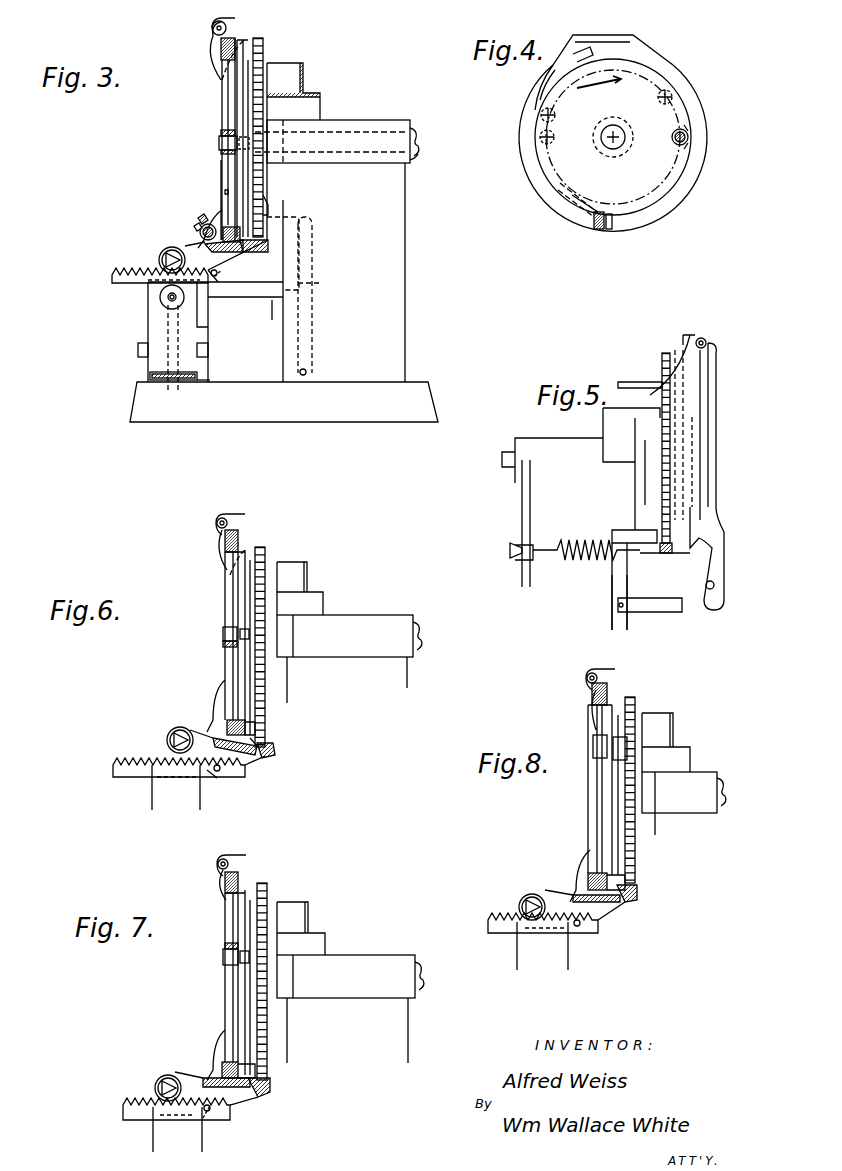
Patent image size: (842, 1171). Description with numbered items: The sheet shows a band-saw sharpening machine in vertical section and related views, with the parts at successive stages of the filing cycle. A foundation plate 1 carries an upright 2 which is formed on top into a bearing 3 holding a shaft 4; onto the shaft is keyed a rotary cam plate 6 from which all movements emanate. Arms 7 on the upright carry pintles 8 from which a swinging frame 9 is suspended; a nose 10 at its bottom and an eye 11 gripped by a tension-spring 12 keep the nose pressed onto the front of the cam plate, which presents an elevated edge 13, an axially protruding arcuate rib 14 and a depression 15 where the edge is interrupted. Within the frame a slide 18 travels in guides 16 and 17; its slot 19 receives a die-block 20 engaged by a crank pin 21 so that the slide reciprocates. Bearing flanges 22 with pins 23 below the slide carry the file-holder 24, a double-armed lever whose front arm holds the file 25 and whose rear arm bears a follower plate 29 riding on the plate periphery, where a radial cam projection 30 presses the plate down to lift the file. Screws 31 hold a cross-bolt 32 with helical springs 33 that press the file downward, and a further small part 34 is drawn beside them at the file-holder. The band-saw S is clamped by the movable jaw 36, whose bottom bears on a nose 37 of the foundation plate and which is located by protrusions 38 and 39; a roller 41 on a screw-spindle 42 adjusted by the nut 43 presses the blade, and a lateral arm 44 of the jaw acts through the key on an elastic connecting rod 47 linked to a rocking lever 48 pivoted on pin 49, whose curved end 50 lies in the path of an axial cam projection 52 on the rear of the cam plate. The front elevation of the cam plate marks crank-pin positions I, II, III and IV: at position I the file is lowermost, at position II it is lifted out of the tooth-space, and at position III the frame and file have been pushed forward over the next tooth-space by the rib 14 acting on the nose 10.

In FIG. 3, the foundation plate 1 is at (432, 390).
In FIG. 3, the upright 2 is at (405, 222).
In FIG. 5, the upright 2 is at (582, 484).
In FIG. 6, the upright 2 is at (342, 632).
In FIG. 7, the upright 2 is at (342, 982).
In FIG. 8, the upright 2 is at (666, 774).
In FIG. 3, the bearing 3 is at (355, 122).
In FIG. 6, the bearing 3 is at (355, 620).
In FIG. 7, the bearing 3 is at (350, 976).
In FIG. 8, the bearing 3 is at (684, 792).
In FIG. 3, the shaft 4 is at (413, 128).
In FIG. 6, the shaft 4 is at (420, 628).
In FIG. 3, the rotary cam plate 6 is at (266, 48).
In FIG. 4, the rotary cam plate 6 is at (613, 137).
In FIG. 5, the rotary cam plate 6 is at (662, 362).
In FIG. 6, the rotary cam plate 6 is at (265, 556).
In FIG. 7, the rotary cam plate 6 is at (267, 1020).
In FIG. 8, the rotary cam plate 6 is at (635, 715).
In FIG. 3, the arms 7 is at (215, 47).
In FIG. 5, the arms 7 is at (700, 368).
In FIG. 3, the pintles 8 is at (212, 28).
In FIG. 5, the pintles 8 is at (708, 341).
In FIG. 6, the pintles 8 is at (216, 523).
In FIG. 7, the pintles 8 is at (217, 864).
In FIG. 8, the pintles 8 is at (600, 679).
In FIG. 3, the frame 9 is at (233, 42).
In FIG. 5, the frame 9 is at (684, 338).
In FIG. 6, the frame 9 is at (236, 536).
In FIG. 7, the frame 9 is at (240, 885).
In FIG. 8, the frame 9 is at (605, 692).
In FIG. 3, the nose 10 is at (252, 262).
In FIG. 6, the nose 10 is at (262, 766).
In FIG. 7, the nose 10 is at (252, 1097).
In FIG. 8, the nose 10 is at (616, 910).
In FIG. 5, the eye 11 is at (672, 553).
In FIG. 5, the tension-spring 12 is at (580, 543).
In FIG. 4, the elevated edge 13 is at (690, 178).
In FIG. 3, the arcuate rib 14 is at (243, 99).
In FIG. 4, the arcuate rib 14 is at (568, 62).
In FIG. 6, the arcuate rib 14 is at (258, 684).
In FIG. 7, the arcuate rib 14 is at (255, 1038).
In FIG. 8, the arcuate rib 14 is at (622, 840).
In FIG. 4, the depression 15 is at (600, 235).
In FIG. 3, the guide 16 is at (231, 234).
In FIG. 6, the guide 16 is at (228, 723).
In FIG. 7, the guide 16 is at (238, 1070).
In FIG. 8, the guide 16 is at (606, 881).
In FIG. 6, the guide 17 is at (225, 545).
In FIG. 3, the slide 18 is at (228, 56).
In FIG. 5, the slide 18 is at (700, 430).
In FIG. 6, the slide 18 is at (226, 594).
In FIG. 7, the slide 18 is at (226, 985).
In FIG. 8, the slide 18 is at (600, 781).
In FIG. 3, the slot 19 is at (224, 115).
In FIG. 3, the die-block 20 is at (221, 134).
In FIG. 6, the die-block 20 is at (223, 646).
In FIG. 7, the die-block 20 is at (226, 946).
In FIG. 3, the crank pin 21 is at (219, 145).
In FIG. 4, the crank pin 21 is at (676, 144).
In FIG. 6, the crank pin 21 is at (223, 634).
In FIG. 7, the crank pin 21 is at (223, 955).
In FIG. 8, the crank pin 21 is at (610, 747).
In FIG. 3, the bearing flanges 22 is at (212, 212).
In FIG. 5, the bearing flanges 22 is at (708, 563).
In FIG. 6, the bearing flanges 22 is at (213, 712).
In FIG. 7, the bearing flanges 22 is at (210, 1065).
In FIG. 8, the bearing flanges 22 is at (578, 875).
In FIG. 3, the pins 23 is at (216, 276).
In FIG. 5, the pins 23 is at (710, 590).
In FIG. 6, the pins 23 is at (218, 772).
In FIG. 7, the pins 23 is at (209, 1112).
In FIG. 8, the pins 23 is at (578, 927).
In FIG. 3, the file-holder 24 is at (195, 253).
In FIG. 6, the file-holder 24 is at (207, 742).
In FIG. 7, the file-holder 24 is at (190, 1085).
In FIG. 8, the file-holder 24 is at (560, 900).
In FIG. 3, the file 25 is at (160, 258).
In FIG. 6, the file 25 is at (168, 734).
In FIG. 7, the file 25 is at (158, 1080).
In FIG. 8, the file 25 is at (522, 898).
In FIG. 3, the follower plate 29 is at (264, 252).
In FIG. 6, the follower plate 29 is at (276, 750).
In FIG. 7, the follower plate 29 is at (259, 1087).
In FIG. 8, the follower plate 29 is at (633, 900).
In FIG. 4, the radial cam projection 30 is at (620, 42).
In FIG. 6, the radial cam projection 30 is at (270, 740).
In FIG. 3, the screws 31 is at (199, 216).
In FIG. 3, the cross-bolt 32 is at (200, 232).
In FIG. 3, the helical springs 33 is at (222, 200).
In FIG. 3, the catch 34 is at (194, 225).
In FIG. 3, the movable gripping jaw 36 is at (156, 332).
In FIG. 6, the movable gripping jaw 36 is at (176, 787).
In FIG. 7, the movable gripping jaw 36 is at (177, 1129).
In FIG. 8, the movable gripping jaw 36 is at (542, 946).
In FIG. 3, the nose 37 is at (212, 380).
In FIG. 3, the protrusion 38 is at (138, 352).
In FIG. 3, the protrusion 39 is at (208, 350).
In FIG. 3, the roller 41 is at (160, 296).
In FIG. 3, the screw-spindle 42 is at (170, 310).
In FIG. 3, the nut 43 is at (150, 378).
In FIG. 3, the lateral arm 44 is at (206, 322).
In FIG. 3, the connecting rod 47 is at (272, 320).
In FIG. 5, the connecting rod 47 is at (655, 612).
In FIG. 3, the rocking lever 48 is at (312, 262).
In FIG. 5, the rocking lever 48 is at (612, 590).
In FIG. 3, the pin 49 is at (309, 370).
In FIG. 3, the curved end 50 is at (287, 217).
In FIG. 5, the curved end 50 is at (638, 533).
In FIG. 3, the axial cam projection 52 is at (270, 203).
In FIG. 3, the band-saw S is at (112, 278).
In FIG. 6, the band-saw S is at (113, 770).
In FIG. 7, the band-saw S is at (123, 1110).
In FIG. 8, the band-saw S is at (490, 922).
In FIG. 4, the crank-pin position I is at (710, 137).
In FIG. 4, the crank-pin position II is at (554, 137).
In FIG. 4, the crank-pin position III is at (556, 114).
In FIG. 4, the position IV is at (655, 97).